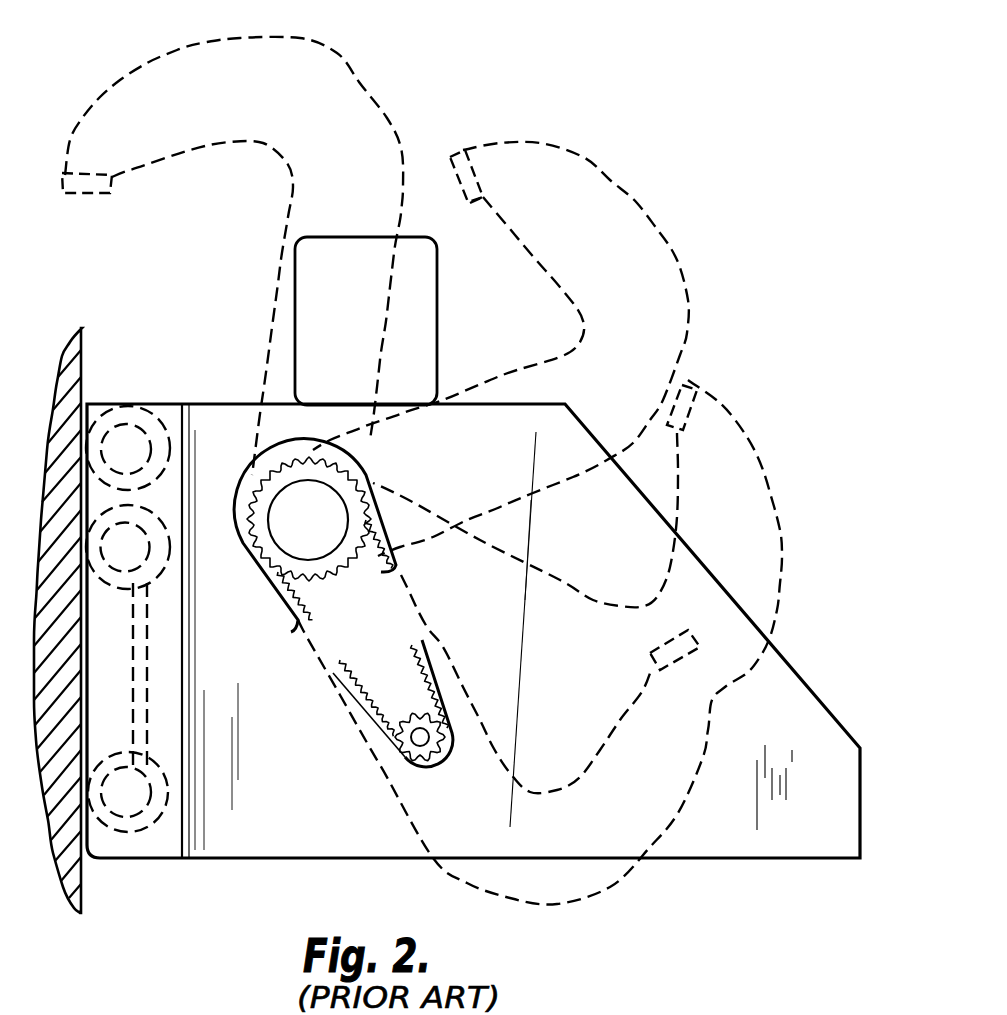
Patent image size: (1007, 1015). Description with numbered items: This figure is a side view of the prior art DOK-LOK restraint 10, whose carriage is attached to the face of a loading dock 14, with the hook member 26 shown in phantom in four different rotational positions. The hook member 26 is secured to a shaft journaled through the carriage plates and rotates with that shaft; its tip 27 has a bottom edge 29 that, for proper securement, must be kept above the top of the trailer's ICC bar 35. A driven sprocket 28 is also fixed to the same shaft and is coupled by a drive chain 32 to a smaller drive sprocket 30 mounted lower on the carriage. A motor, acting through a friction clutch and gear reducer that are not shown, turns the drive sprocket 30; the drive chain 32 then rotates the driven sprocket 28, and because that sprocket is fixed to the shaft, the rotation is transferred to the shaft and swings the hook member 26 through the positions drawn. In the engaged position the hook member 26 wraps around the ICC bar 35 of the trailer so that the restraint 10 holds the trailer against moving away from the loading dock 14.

The DOK-LOK restraint 10 is at (636, 80).
The loading dock 14 is at (84, 350).
The hook member 26 is at (357, 83).
The tip 27 is at (110, 194).
The driven sprocket 28 is at (270, 544).
The bottom edge 29 is at (474, 199).
The drive sprocket 30 is at (407, 757).
The drive chain 32 is at (373, 708).
The ICC bar 35 is at (439, 284).